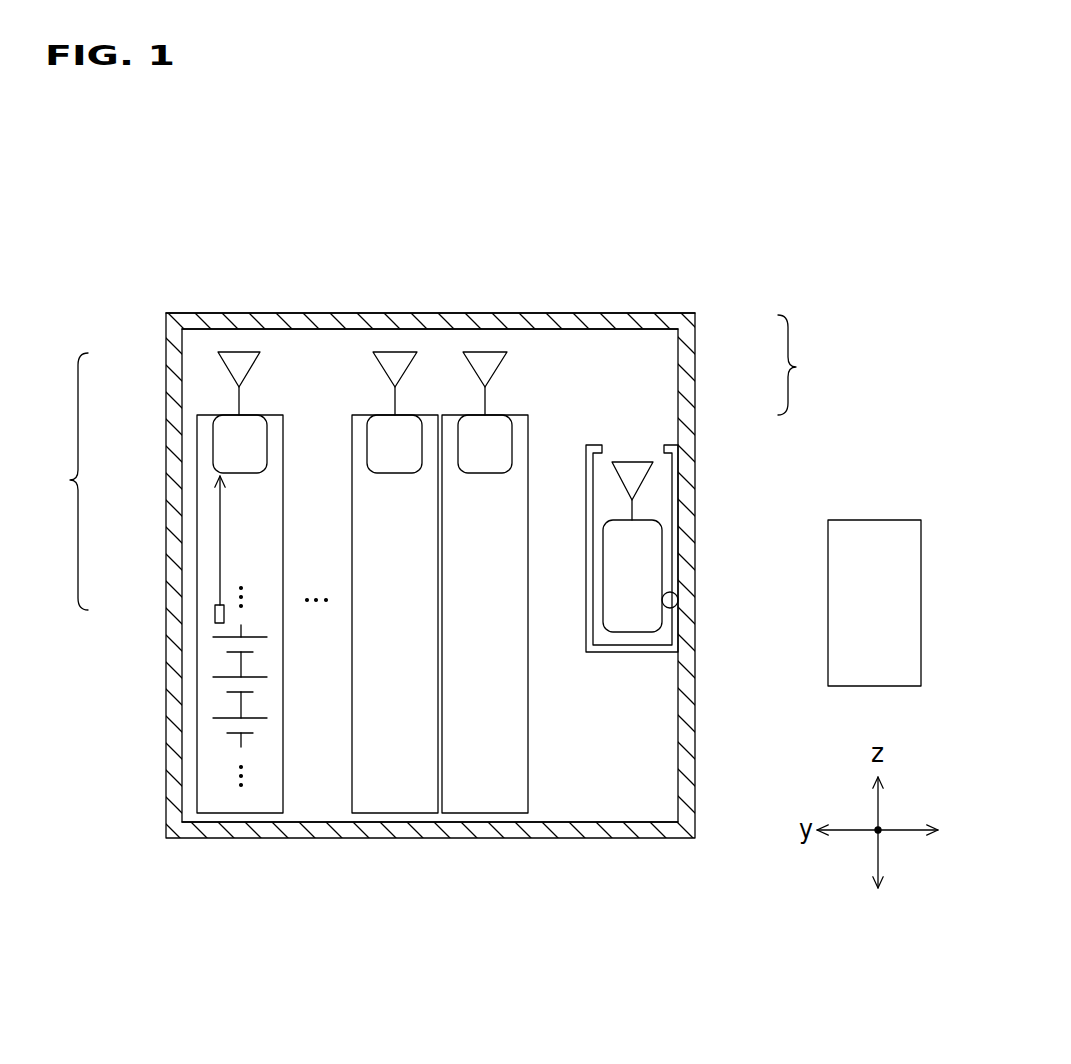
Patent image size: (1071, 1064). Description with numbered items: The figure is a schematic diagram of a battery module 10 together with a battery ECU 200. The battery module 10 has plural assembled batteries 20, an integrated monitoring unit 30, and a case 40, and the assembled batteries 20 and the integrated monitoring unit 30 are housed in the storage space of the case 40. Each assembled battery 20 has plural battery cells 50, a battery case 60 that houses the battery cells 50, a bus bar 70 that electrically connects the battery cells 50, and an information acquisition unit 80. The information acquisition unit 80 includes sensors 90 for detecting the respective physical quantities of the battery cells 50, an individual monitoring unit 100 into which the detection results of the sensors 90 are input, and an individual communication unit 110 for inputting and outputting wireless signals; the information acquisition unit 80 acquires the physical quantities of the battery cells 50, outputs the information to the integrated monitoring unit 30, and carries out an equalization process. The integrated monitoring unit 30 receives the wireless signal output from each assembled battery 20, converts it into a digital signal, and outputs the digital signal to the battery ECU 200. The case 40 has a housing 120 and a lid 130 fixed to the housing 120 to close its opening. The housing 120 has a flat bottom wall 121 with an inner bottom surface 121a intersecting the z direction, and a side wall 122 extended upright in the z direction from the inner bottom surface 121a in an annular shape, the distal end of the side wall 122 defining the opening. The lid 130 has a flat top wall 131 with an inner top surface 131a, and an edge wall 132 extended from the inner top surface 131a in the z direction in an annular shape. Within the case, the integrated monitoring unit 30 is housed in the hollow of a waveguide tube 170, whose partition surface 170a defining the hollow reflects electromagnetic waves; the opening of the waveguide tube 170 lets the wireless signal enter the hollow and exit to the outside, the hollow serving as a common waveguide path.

The battery module 10 is at (461, 567).
The assembled battery 20 is at (311, 334).
The integrated monitoring unit 30 is at (652, 510).
The case 40 is at (804, 365).
The battery cell 50 is at (222, 717).
The battery case 60 is at (197, 802).
The bus bar 70 is at (238, 662).
The information acquisition unit 80 is at (157, 583).
The sensor 90 is at (215, 614).
The individual monitoring unit 100 is at (213, 457).
The individual communication unit 110 is at (232, 375).
The housing 120 is at (468, 617).
The bottom wall 121 is at (631, 838).
The inner bottom surface 121a is at (580, 822).
The side wall 122 is at (695, 743).
The lid 130 is at (431, 538).
The top wall 131 is at (203, 312).
The inner top surface 131a is at (596, 329).
The edge wall 132 is at (166, 337).
The waveguide tube 170 is at (677, 557).
The partition surface 170a is at (678, 600).
The battery ECU 200 is at (878, 520).